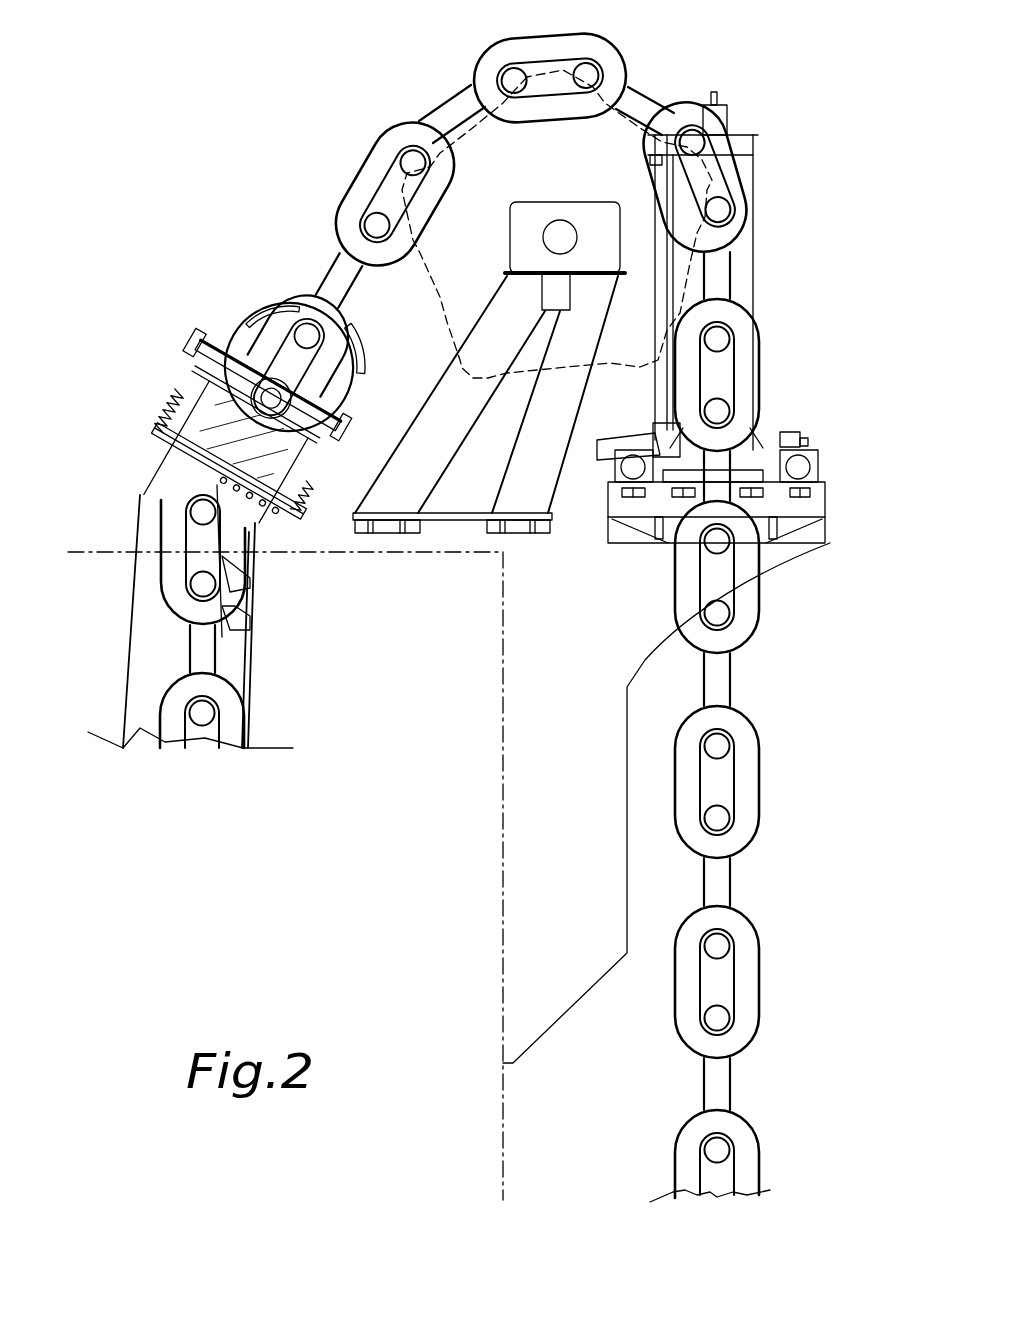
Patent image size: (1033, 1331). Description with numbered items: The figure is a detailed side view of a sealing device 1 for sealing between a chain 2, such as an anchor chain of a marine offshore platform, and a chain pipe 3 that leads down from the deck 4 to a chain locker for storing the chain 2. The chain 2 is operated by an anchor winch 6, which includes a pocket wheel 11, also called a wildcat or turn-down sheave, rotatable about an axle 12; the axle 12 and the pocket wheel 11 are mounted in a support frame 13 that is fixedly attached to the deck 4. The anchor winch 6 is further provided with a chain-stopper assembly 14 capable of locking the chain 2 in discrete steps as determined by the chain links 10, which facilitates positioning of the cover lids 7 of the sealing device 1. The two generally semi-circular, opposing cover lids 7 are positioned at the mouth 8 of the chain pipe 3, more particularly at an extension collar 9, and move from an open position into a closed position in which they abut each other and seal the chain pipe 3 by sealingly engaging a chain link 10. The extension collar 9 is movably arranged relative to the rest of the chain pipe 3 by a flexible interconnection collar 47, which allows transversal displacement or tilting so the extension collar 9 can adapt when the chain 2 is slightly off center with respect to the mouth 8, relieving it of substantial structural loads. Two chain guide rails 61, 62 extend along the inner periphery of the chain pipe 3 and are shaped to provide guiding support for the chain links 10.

The sealing device 1 is at (270, 235).
The chain 2 is at (373, 142).
The chain pipe 3 is at (130, 647).
The deck 4 is at (90, 552).
The anchor winch 6 is at (647, 77).
The cover lids 7 is at (250, 320).
The mouth 8 is at (197, 350).
The extension collar 9 is at (213, 400).
The chain link 10 is at (295, 303).
The pocket wheel 11 is at (500, 157).
The axle 12 is at (552, 228).
The support frame 13 is at (577, 340).
The chain-stopper assembly 14 is at (793, 428).
The flexible interconnection collar 47 is at (197, 430).
The chain guide rail 61 is at (240, 623).
The chain guide rail 62 is at (237, 563).